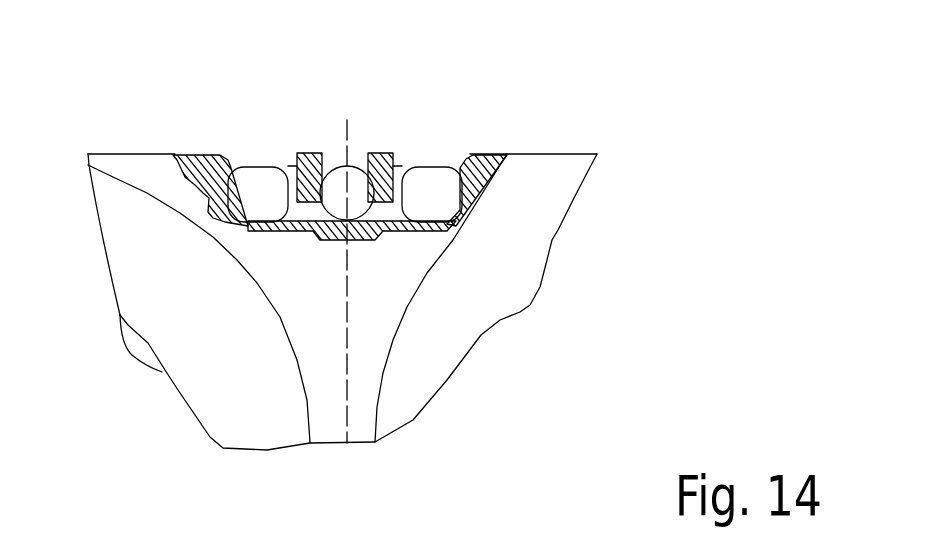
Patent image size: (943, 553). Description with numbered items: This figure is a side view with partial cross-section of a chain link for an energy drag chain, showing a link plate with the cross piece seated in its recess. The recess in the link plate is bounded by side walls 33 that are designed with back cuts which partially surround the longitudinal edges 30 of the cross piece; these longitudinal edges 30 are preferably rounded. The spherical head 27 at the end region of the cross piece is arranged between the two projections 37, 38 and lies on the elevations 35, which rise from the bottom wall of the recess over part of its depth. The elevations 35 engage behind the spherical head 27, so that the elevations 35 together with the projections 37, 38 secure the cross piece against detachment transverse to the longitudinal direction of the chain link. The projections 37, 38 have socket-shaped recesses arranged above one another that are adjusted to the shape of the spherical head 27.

The spherical head 27 is at (350, 185).
The longitudinal edges 30 is at (193, 157).
The side walls 33 is at (222, 157).
The elevations 35 is at (305, 238).
The projection 37 is at (308, 153).
The projection 38 is at (382, 157).